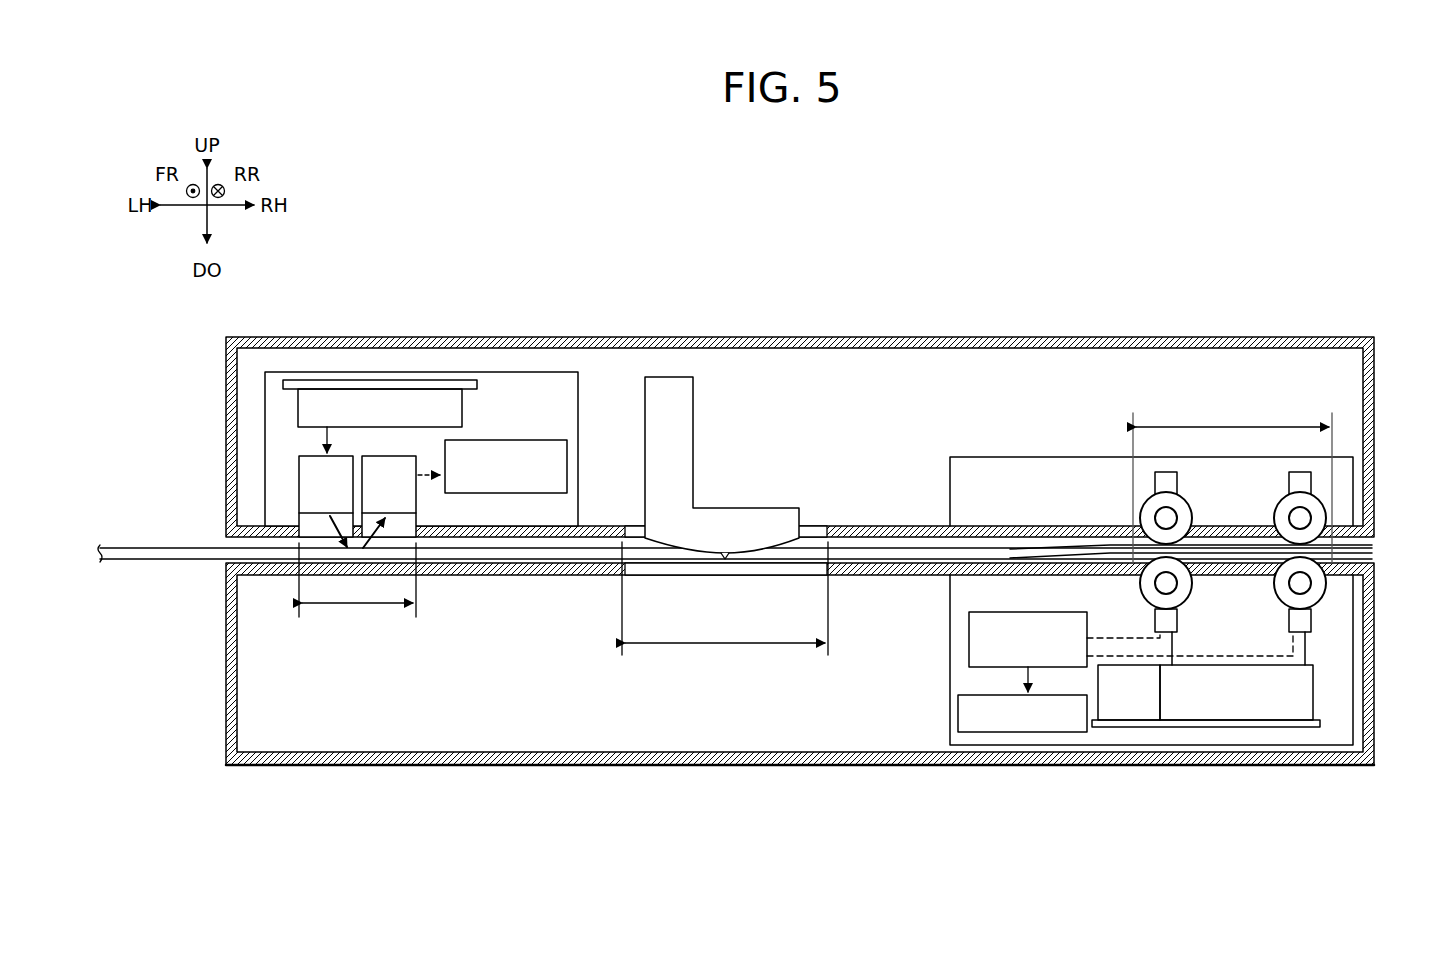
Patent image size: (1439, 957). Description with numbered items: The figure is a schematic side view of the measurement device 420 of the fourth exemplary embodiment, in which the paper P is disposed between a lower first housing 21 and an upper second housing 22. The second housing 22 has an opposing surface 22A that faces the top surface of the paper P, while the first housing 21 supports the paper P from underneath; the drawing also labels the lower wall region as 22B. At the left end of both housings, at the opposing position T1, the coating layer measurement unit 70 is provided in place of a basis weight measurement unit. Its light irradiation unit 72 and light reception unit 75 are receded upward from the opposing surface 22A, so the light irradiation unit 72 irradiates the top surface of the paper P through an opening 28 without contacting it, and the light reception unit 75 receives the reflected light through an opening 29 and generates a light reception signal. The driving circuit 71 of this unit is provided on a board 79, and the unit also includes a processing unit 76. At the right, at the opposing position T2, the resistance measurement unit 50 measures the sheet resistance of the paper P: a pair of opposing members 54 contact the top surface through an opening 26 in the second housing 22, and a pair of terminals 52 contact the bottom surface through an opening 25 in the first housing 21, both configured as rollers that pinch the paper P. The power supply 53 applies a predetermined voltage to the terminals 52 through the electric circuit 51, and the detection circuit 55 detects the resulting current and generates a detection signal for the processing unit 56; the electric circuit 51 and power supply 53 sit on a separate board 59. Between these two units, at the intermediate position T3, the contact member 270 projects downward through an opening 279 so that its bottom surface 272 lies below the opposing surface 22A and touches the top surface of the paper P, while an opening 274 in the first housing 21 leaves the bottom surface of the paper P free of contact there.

The measurement device 420 is at (1287, 240).
The second housing 22 is at (1216, 331).
The first housing 21 is at (1326, 770).
The opposing surface 22A is at (882, 541).
The lower wall 22B is at (898, 561).
The coating layer measurement unit 70 is at (530, 372).
The board 79 is at (380, 380).
The driving circuit 71 is at (463, 405).
The processing unit 76 is at (545, 440).
The light irradiation unit 72 is at (299, 483).
The light reception unit 75 is at (385, 456).
The opening 28 is at (318, 516).
The opening 29 is at (398, 522).
The contact member 270 is at (694, 421).
The bottom surface 272 is at (729, 554).
The opening 279 is at (630, 527).
The opening 274 is at (662, 574).
The resistance measurement unit 50 is at (1368, 585).
The opposing members 54 is at (1143, 505).
The terminals 52 is at (1143, 597).
The opening 26 is at (1270, 528).
The opening 25 is at (1270, 573).
The detection circuit 55 is at (969, 648).
The processing unit 56 is at (1030, 733).
The power supply 53 is at (1148, 721).
The electric circuit 51 is at (1313, 681).
The board 59 is at (1222, 728).
The paper P is at (133, 561).
The opposing position T1 is at (357, 591).
The opposing position T2 is at (1232, 479).
The intermediate position T3 is at (725, 611).